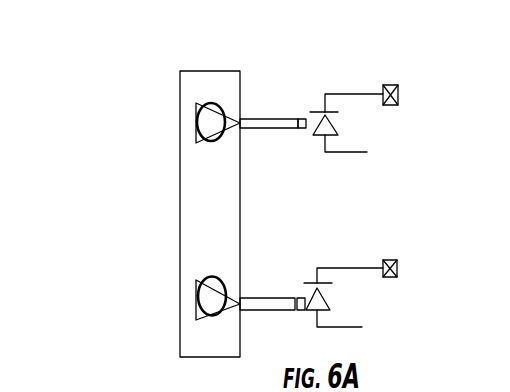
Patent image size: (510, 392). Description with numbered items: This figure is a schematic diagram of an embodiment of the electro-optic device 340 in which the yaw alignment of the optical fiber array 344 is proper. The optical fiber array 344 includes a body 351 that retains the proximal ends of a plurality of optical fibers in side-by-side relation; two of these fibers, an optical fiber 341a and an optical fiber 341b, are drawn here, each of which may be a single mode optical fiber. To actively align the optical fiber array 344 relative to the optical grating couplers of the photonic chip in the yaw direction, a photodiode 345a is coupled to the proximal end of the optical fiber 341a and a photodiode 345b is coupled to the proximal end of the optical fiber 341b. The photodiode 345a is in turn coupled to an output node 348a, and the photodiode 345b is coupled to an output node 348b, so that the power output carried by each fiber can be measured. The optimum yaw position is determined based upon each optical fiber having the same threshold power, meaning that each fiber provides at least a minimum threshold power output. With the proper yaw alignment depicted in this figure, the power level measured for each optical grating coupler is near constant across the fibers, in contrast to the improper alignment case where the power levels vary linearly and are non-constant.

The electro-optic device 340 is at (300, 29).
The optical fiber array 344 is at (213, 69).
The body 351 is at (188, 88).
The optical fiber 341a is at (207, 138).
The optical fiber 341b is at (207, 288).
The photodiode 345a is at (322, 116).
The photodiode 345b is at (316, 287).
The output node 348a is at (390, 85).
The output node 348b is at (390, 260).